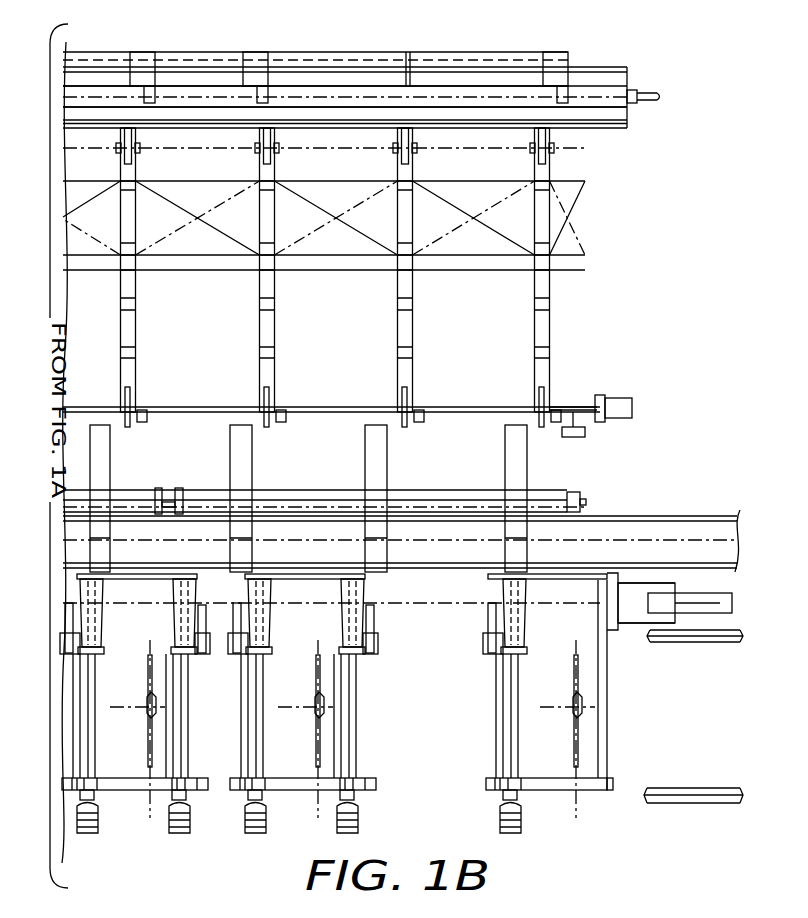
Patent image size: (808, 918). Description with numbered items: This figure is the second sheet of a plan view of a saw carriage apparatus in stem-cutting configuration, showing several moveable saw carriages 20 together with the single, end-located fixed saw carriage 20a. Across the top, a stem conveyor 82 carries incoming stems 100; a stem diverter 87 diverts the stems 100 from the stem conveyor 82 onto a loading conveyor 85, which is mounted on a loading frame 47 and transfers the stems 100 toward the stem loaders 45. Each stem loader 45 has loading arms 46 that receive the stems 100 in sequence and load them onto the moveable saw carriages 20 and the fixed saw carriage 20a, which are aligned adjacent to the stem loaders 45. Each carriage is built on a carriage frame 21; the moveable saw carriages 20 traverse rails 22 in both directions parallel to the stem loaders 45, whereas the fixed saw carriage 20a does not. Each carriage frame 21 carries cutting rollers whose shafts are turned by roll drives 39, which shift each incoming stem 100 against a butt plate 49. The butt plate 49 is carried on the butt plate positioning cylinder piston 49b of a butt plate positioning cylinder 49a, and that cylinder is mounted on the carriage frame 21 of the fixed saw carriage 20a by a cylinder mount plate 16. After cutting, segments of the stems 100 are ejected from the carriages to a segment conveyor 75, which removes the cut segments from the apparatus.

The stem conveyor 82 is at (220, 64).
The stem diverter 87 is at (98, 52).
The stem 100 is at (551, 106).
The loading frame 47 is at (580, 253).
The loading conveyor 85 is at (119, 332).
The loading arms 46 is at (100, 553).
The stem loader 45 is at (560, 481).
The segment conveyor 75 is at (711, 511).
The moveable saw carriage 20 is at (211, 797).
The fixed saw carriage 20a is at (591, 800).
The carriage frame 21 is at (120, 794).
The roll drive 39 is at (174, 840).
The butt plate 49 is at (608, 632).
The butt plate positioning cylinder 49a is at (733, 604).
The butt plate positioning cylinder piston 49b is at (632, 598).
The cylinder mount plate 16 is at (676, 594).
The rail 22 is at (695, 646).